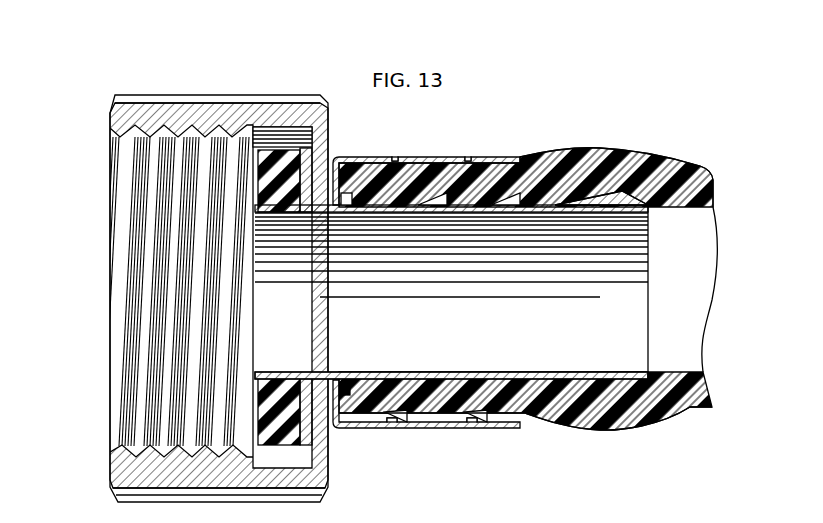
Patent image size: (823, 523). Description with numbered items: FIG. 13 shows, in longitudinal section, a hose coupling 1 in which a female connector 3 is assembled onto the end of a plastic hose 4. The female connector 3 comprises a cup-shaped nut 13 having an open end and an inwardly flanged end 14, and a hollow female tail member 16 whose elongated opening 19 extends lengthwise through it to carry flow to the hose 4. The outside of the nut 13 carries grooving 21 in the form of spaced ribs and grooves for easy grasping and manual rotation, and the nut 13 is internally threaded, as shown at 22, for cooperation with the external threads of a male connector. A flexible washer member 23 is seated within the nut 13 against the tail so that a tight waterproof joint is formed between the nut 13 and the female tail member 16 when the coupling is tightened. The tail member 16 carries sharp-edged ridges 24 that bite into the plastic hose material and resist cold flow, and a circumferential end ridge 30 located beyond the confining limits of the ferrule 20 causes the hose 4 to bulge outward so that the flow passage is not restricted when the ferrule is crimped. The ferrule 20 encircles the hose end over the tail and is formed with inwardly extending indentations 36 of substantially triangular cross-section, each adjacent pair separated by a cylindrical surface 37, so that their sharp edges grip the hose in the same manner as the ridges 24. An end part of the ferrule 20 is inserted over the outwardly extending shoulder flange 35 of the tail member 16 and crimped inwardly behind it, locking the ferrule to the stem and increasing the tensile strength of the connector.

The hose 1 is at (563, 147).
The female connector 3 is at (113, 90).
The hose 4 is at (306, 120).
The nut 13 is at (176, 110).
The flanged end 14 is at (297, 127).
The female tail member 16 is at (507, 213).
The elongated opening 19 is at (330, 155).
The ferrule 20 is at (545, 152).
The grooving 21 is at (148, 100).
The internal threads 22 is at (137, 131).
The flexible washer member 23 is at (269, 150).
The ridges 24 is at (437, 380).
The circumferential end ridge 30 is at (617, 193).
The shoulder flange 35 is at (357, 190).
The indentations 36 is at (398, 156).
The cylindrical surface 37 is at (392, 157).